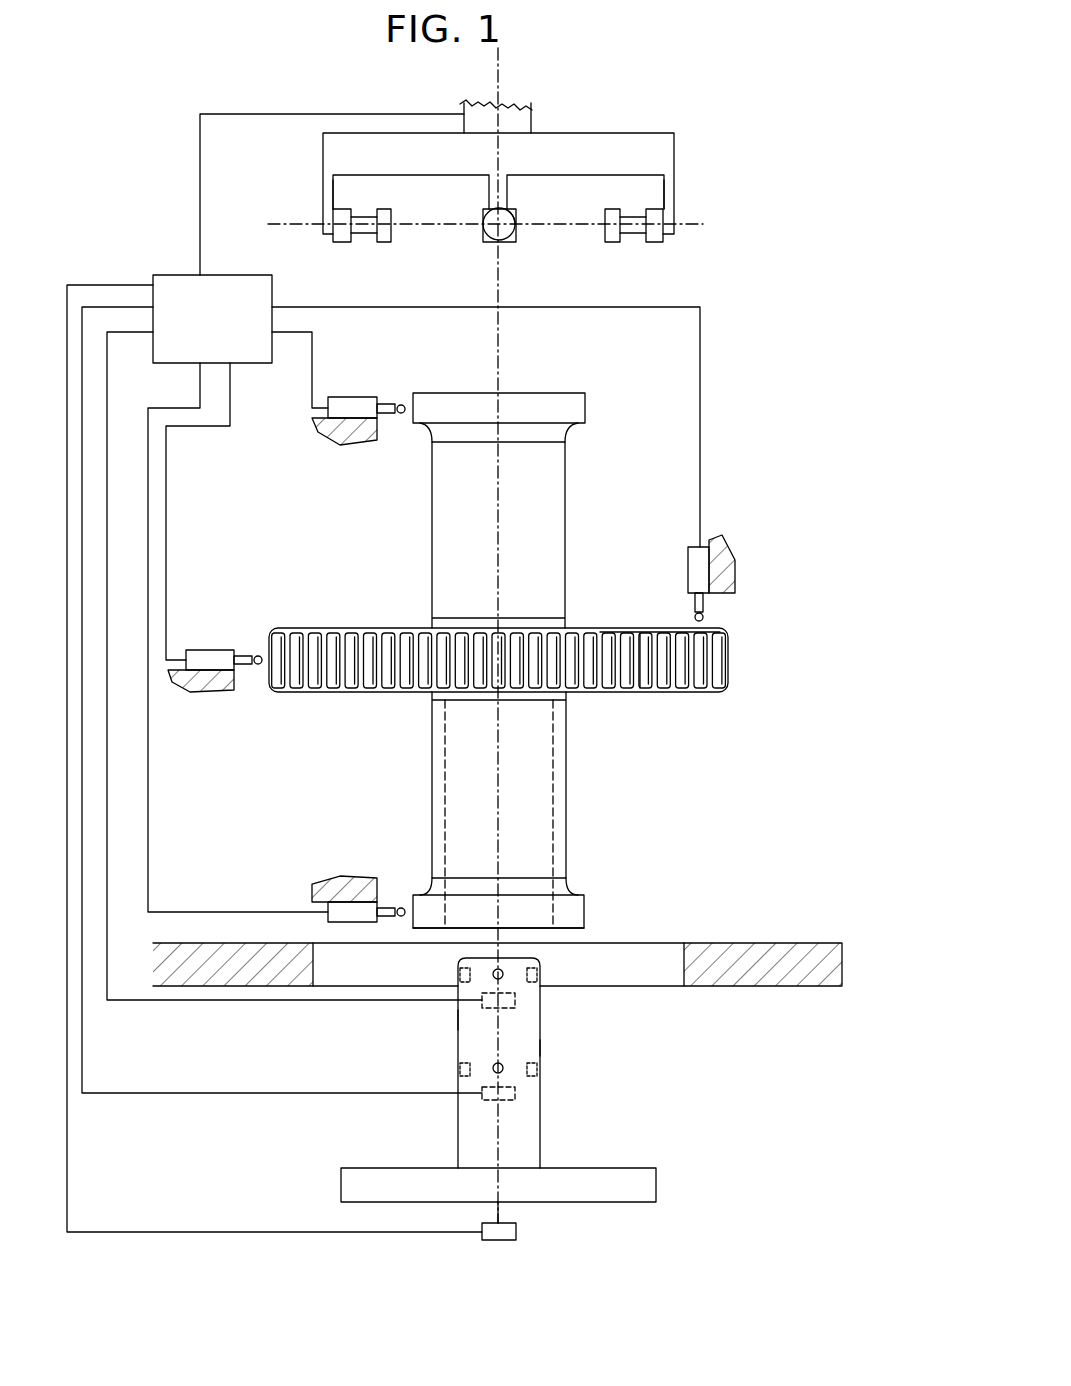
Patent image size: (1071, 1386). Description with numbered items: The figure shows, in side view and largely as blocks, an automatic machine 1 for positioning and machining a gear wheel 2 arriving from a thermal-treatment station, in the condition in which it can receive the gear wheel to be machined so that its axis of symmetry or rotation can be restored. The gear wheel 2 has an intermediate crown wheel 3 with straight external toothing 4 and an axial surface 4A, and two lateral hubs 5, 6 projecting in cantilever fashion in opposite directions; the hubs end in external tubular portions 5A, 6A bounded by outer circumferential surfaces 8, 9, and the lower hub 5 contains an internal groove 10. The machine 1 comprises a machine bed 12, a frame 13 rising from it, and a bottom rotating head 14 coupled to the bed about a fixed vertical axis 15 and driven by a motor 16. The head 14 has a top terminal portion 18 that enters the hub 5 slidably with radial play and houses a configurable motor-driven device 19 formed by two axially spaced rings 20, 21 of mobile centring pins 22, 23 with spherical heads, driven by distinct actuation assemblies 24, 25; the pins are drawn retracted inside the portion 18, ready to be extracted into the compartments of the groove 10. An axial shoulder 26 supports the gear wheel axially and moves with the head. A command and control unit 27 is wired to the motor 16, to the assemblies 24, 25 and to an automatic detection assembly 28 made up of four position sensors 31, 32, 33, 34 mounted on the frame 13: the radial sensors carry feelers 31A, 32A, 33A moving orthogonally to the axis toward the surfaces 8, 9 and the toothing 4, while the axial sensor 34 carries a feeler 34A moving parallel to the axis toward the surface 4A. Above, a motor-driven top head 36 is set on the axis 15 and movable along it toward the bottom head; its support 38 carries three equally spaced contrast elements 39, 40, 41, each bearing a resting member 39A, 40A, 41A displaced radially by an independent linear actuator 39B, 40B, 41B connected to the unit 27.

The automatic machine 1 is at (798, 130).
The gear wheel 2 is at (745, 651).
The intermediate crown wheel 3 is at (646, 630).
The external toothing 4 is at (742, 681).
The axial surface 4A is at (672, 624).
The lateral hub 5 is at (543, 767).
The external tubular portion 5A is at (587, 914).
The lateral hub 6 is at (553, 508).
The external tubular portion 6A is at (577, 426).
The outer circumferential surface 8 is at (592, 896).
The outer circumferential surface 9 is at (590, 404).
The internal groove 10 is at (449, 750).
The machine bed 12 is at (784, 943).
The frame 13 is at (330, 435).
The bottom rotating head 14 is at (628, 1043).
The fixed vertical axis 15 is at (503, 66).
The motor 16 is at (517, 1232).
The top terminal portion 18 is at (531, 1048).
The configurable motor-driven device 19 is at (530, 1022).
The ring of spherical heads 20 is at (549, 1074).
The ring of spherical heads 21 is at (550, 989).
The mobile centring pin 22 is at (492, 1069).
The mobile centring pin 23 is at (492, 975).
The motor-driven actuation assembly 24 is at (489, 1100).
The motor-driven actuation assembly 25 is at (489, 1009).
The axial shoulder 26 is at (607, 1164).
The command and control unit 27 is at (176, 280).
The automatic detection assembly 28 is at (233, 700).
The radial position sensor 31 is at (357, 932).
The feeler 31A is at (401, 907).
The radial position sensor 32 is at (345, 396).
The feeler 32A is at (401, 404).
The radial position sensor 33 is at (206, 647).
The feeler 33A is at (258, 655).
The axial position sensor 34 is at (683, 546).
The feeler 34A is at (704, 617).
The top head 36 is at (648, 106).
The support column 38 is at (458, 104).
The contrast element 39 is at (660, 245).
The resting member 39A is at (612, 243).
The motor-driven linear actuator 39B is at (659, 213).
The contrast element 40 is at (520, 243).
The resting member 40A is at (525, 223).
The motor-driven linear actuator 40B is at (488, 242).
The contrast element 41 is at (337, 247).
The resting member 41A is at (386, 243).
The motor-driven linear actuator 41B is at (338, 213).